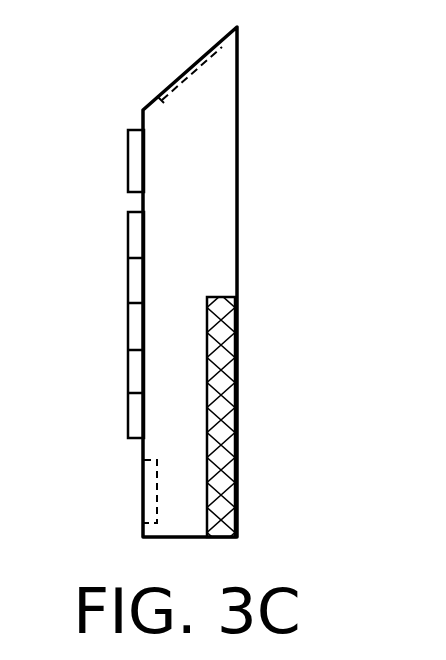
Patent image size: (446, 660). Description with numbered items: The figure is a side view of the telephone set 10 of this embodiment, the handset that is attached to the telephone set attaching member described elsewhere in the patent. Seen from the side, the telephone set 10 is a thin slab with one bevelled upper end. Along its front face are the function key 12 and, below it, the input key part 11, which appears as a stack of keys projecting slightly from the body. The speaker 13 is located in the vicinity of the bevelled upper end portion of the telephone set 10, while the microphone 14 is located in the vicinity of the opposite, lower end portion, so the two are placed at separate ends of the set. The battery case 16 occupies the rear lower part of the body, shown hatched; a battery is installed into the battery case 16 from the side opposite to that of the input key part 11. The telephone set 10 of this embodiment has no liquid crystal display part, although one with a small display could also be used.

The telephone set 10 is at (237, 108).
The input key part 11 is at (128, 242).
The function key 12 is at (128, 158).
The speaker 13 is at (187, 67).
The microphone 14 is at (144, 493).
The battery case 16 is at (238, 413).